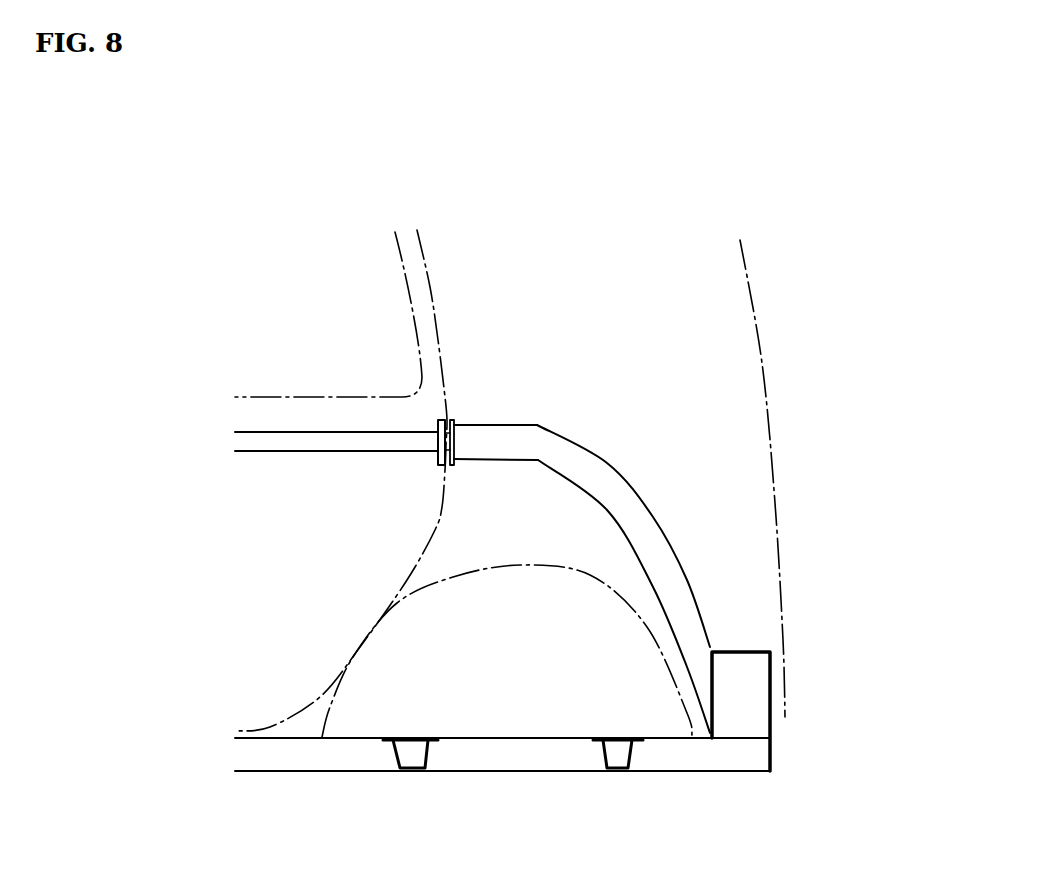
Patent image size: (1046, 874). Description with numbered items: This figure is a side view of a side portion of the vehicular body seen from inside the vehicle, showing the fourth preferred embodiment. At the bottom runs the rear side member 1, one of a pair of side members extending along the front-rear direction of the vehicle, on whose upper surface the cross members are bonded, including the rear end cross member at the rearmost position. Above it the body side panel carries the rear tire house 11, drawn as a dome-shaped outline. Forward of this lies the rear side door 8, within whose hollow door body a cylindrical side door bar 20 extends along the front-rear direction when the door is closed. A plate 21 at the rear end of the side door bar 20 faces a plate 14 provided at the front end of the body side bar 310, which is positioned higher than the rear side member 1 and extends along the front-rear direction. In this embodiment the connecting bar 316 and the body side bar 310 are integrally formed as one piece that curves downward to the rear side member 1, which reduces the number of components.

The rear side member 1 is at (533, 773).
The rear side door 8 is at (427, 263).
The rear tire house 11 is at (333, 722).
The plate 14 is at (452, 418).
The side door bar 20 is at (308, 453).
The plate 21 is at (436, 465).
The body side bar 310 is at (591, 538).
The connecting bar 316 is at (653, 523).